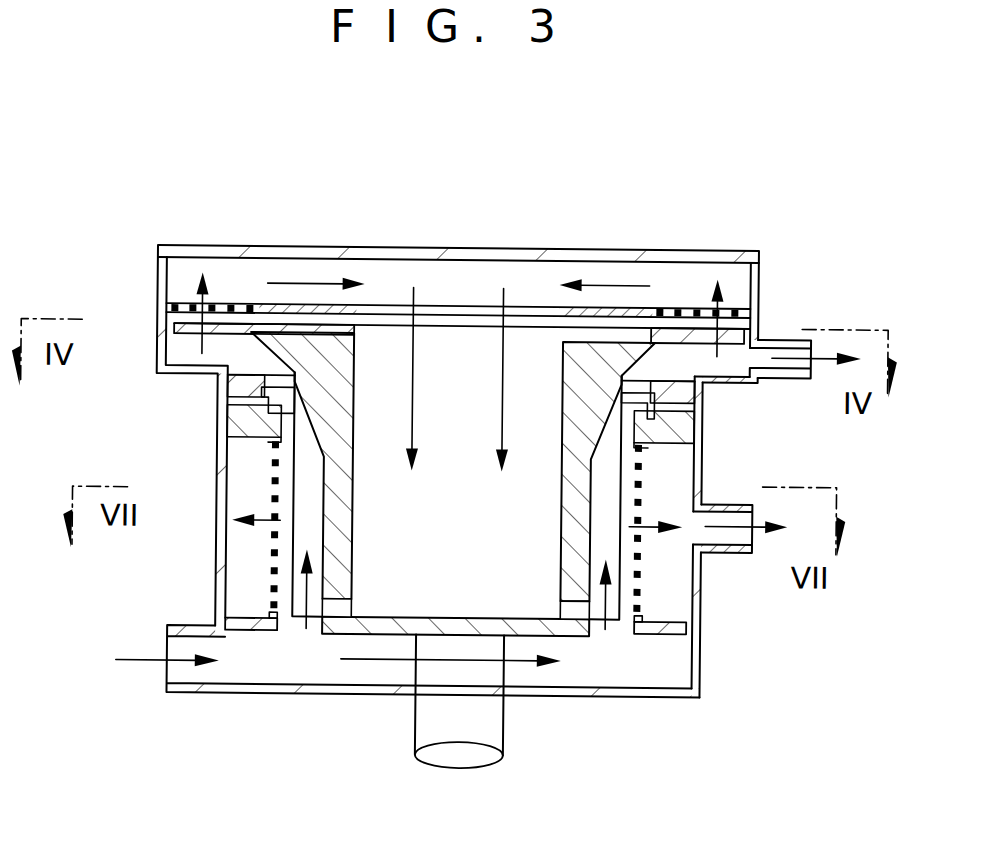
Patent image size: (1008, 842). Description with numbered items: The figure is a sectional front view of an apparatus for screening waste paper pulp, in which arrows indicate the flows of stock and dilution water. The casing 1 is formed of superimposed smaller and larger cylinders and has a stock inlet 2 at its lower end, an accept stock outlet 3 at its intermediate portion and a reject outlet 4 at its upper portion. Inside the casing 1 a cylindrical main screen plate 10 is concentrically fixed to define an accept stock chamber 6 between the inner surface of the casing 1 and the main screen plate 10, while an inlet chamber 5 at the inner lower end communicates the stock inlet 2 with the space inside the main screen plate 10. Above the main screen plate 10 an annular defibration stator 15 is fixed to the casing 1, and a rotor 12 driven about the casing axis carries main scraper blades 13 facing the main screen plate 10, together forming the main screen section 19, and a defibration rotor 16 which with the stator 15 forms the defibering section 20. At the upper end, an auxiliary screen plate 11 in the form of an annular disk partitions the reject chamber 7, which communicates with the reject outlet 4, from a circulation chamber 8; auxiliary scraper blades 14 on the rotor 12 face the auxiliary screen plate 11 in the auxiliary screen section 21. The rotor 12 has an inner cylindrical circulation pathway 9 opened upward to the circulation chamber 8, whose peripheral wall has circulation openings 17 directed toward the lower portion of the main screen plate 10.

The casing 1 is at (300, 245).
The stock inlet 2 is at (191, 693).
The accept stock outlet 3 is at (735, 549).
The reject outlet 4 is at (790, 334).
The inlet chamber 5 is at (296, 666).
The accept stock chamber 6 is at (697, 637).
The reject chamber 7 is at (735, 360).
The circulation chamber 8 is at (692, 278).
The circulation pathway 9 is at (470, 358).
The main screen plate 10 is at (272, 530).
The auxiliary screen plate 11 is at (726, 297).
The rotor 12 is at (417, 714).
The main scraper blades 13 is at (628, 486).
The auxiliary scraper blades 14 is at (749, 334).
The defibration stator 15 is at (260, 418).
The defibration rotor 16 is at (262, 392).
The circulation openings 17 is at (343, 606).
The main screen section 19 is at (625, 648).
The defibering section 20 is at (684, 406).
The auxiliary screen section 21 is at (160, 315).